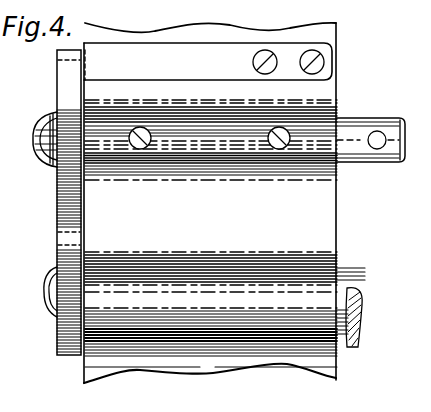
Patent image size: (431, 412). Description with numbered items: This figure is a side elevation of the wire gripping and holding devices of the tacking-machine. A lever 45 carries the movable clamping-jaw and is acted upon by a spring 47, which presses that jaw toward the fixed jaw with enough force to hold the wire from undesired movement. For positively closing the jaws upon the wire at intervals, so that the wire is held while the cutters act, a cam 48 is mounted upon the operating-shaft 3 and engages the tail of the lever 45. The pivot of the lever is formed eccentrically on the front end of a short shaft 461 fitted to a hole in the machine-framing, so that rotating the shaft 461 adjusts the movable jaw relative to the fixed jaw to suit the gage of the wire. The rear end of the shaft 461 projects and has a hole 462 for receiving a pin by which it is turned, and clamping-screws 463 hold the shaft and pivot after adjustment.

The operating-shaft 3 is at (352, 296).
The lever 45 is at (56, 188).
The spring 47 is at (208, 61).
The cam 48 is at (56, 335).
The short shaft 461 is at (385, 100).
The hole 462 is at (378, 150).
The clamping-screws 463 is at (275, 149).